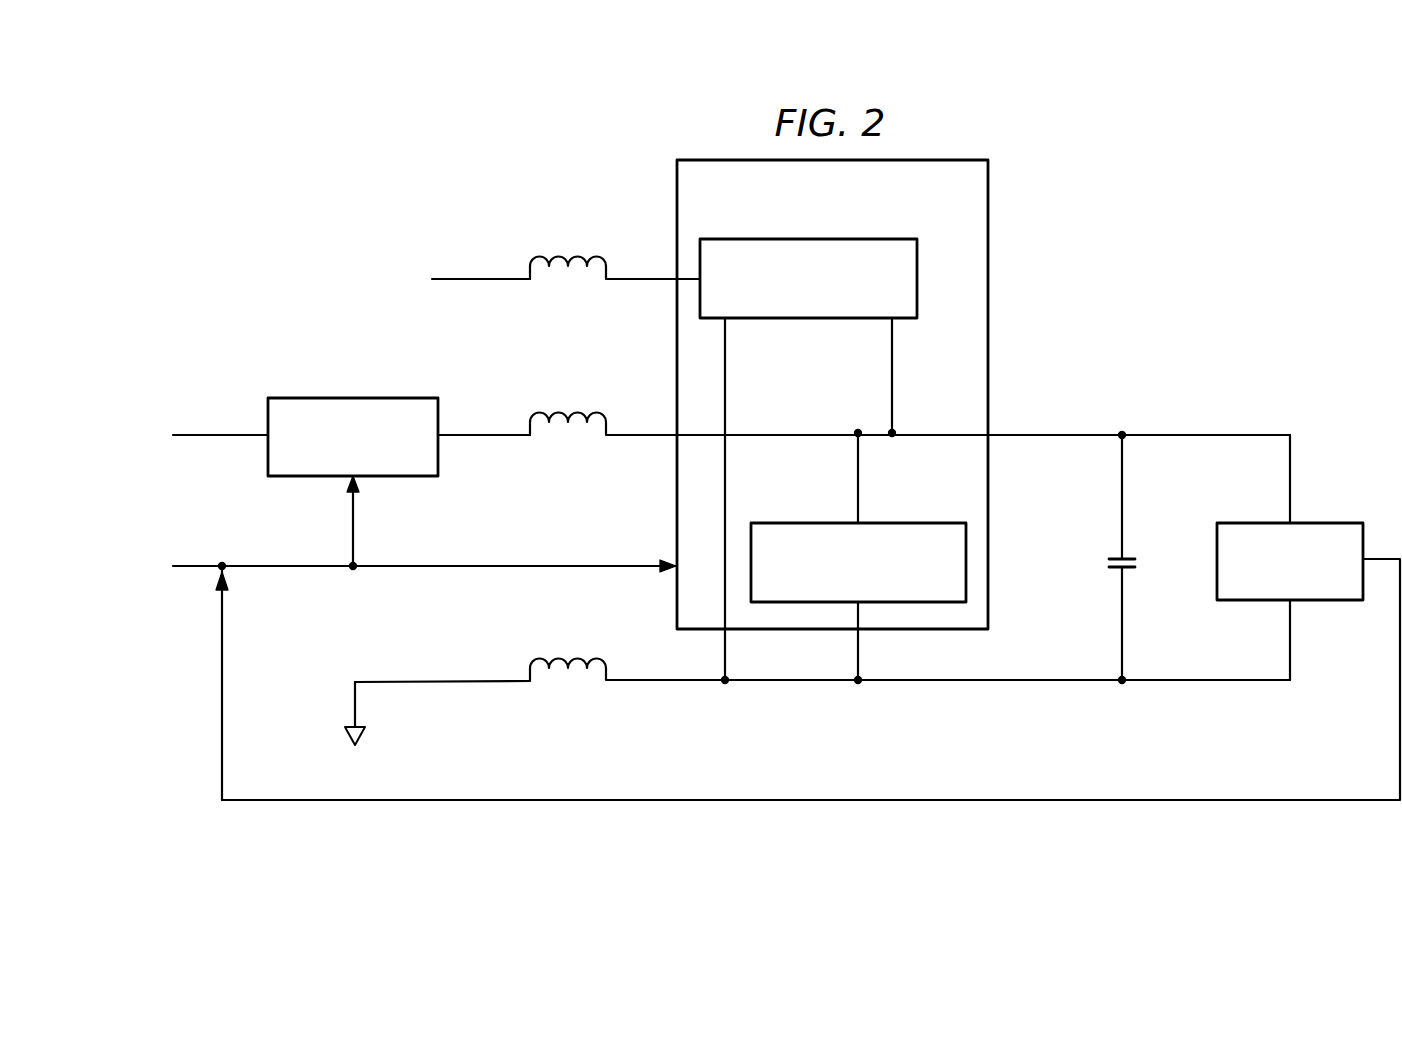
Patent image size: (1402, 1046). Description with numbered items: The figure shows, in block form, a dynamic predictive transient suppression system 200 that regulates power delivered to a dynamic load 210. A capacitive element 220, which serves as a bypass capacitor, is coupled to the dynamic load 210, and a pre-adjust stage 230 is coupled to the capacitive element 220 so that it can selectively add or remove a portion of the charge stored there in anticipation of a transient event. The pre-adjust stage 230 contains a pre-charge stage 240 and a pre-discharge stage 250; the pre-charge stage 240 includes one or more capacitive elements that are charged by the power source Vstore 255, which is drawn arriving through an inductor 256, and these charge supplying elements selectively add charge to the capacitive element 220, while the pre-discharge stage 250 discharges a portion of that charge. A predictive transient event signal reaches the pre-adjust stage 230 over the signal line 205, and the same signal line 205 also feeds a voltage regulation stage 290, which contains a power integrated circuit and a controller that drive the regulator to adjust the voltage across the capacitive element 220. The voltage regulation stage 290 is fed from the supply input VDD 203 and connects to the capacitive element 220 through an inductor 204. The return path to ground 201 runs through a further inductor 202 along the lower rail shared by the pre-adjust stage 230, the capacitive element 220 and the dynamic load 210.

The dynamic predictive transient suppression system 200 is at (1172, 290).
The ground 201 is at (346, 738).
The inductor (ground path) 202 is at (559, 659).
The supply voltage VDD input 203 is at (137, 410).
The inductor (VDD path) 204 is at (559, 413).
The predictive transient event signal line 205 is at (120, 590).
The dynamic load 210 is at (1336, 520).
The capacitive element 220 is at (1104, 561).
The pre-adjust stage 230 is at (958, 142).
The pre-charge stage 240 is at (790, 238).
The pre-discharge stage 250 is at (892, 522).
The power source Vstore 255 is at (384, 258).
The inductor (VSTORE path) 256 is at (559, 258).
The voltage regulation stage 290 is at (345, 396).